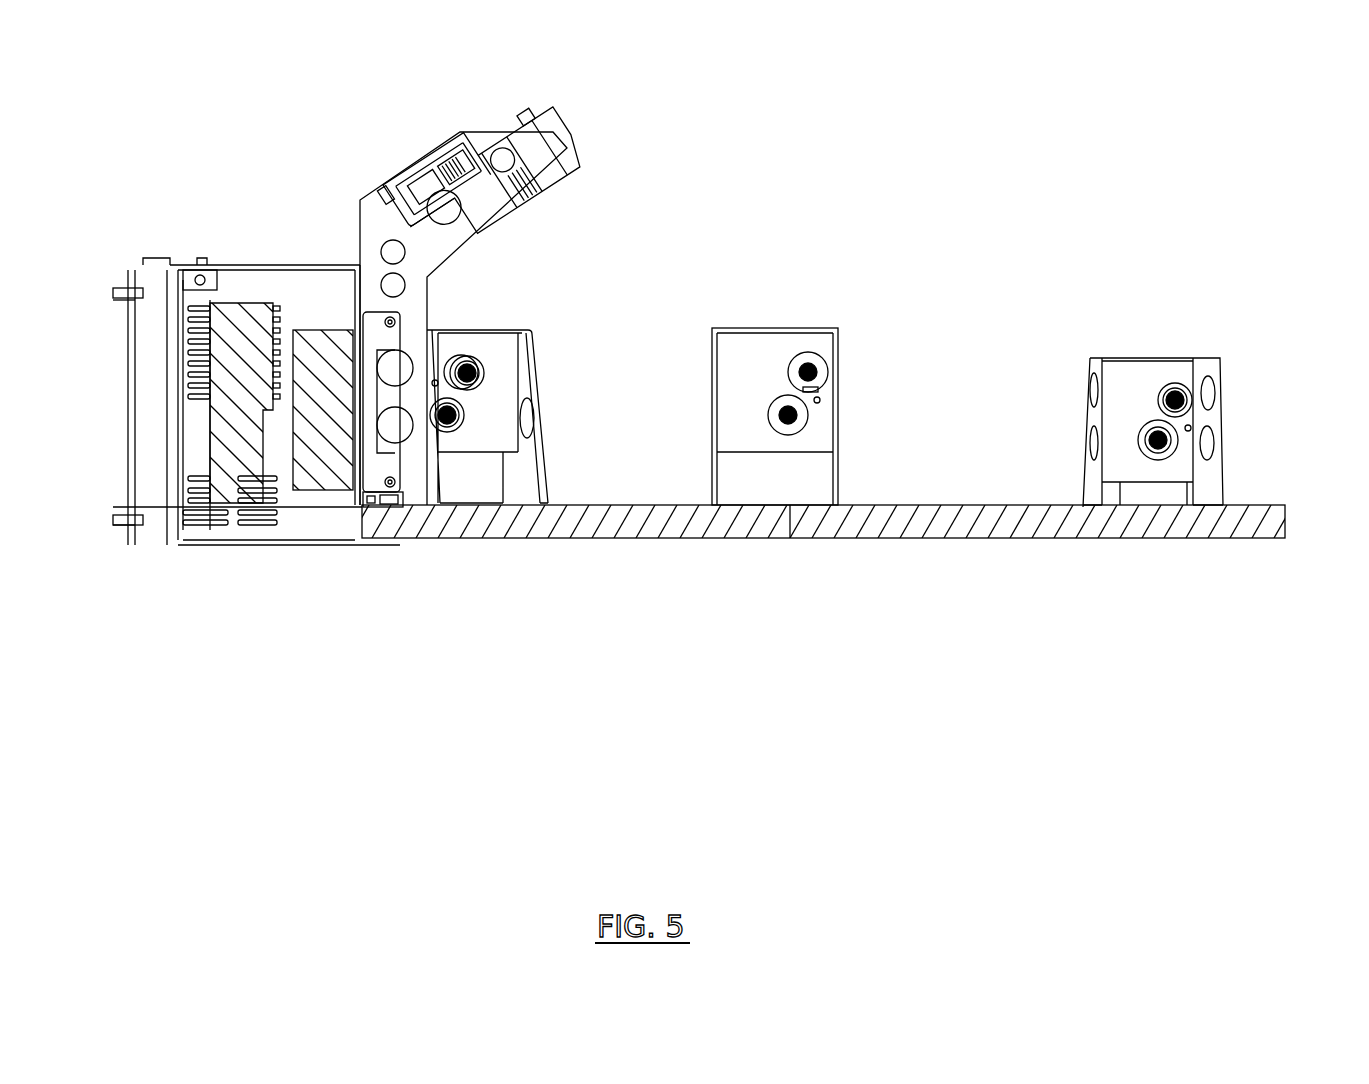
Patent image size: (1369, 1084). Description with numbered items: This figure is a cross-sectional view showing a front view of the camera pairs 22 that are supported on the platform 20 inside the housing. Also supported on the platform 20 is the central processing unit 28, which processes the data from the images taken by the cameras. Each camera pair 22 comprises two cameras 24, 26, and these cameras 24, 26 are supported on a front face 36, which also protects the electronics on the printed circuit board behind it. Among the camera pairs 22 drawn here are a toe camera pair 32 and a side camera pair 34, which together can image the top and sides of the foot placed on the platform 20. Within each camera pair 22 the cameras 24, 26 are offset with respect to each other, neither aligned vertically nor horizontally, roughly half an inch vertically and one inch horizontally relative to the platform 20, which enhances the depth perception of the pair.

The platform 20 is at (923, 518).
The camera pair 22 is at (812, 295).
The camera 24 is at (475, 372).
The camera 26 is at (453, 415).
The central processing unit 28 is at (250, 340).
The toe camera pair 32 is at (560, 200).
The side camera pair 34 is at (792, 343).
The front face 36 is at (752, 370).